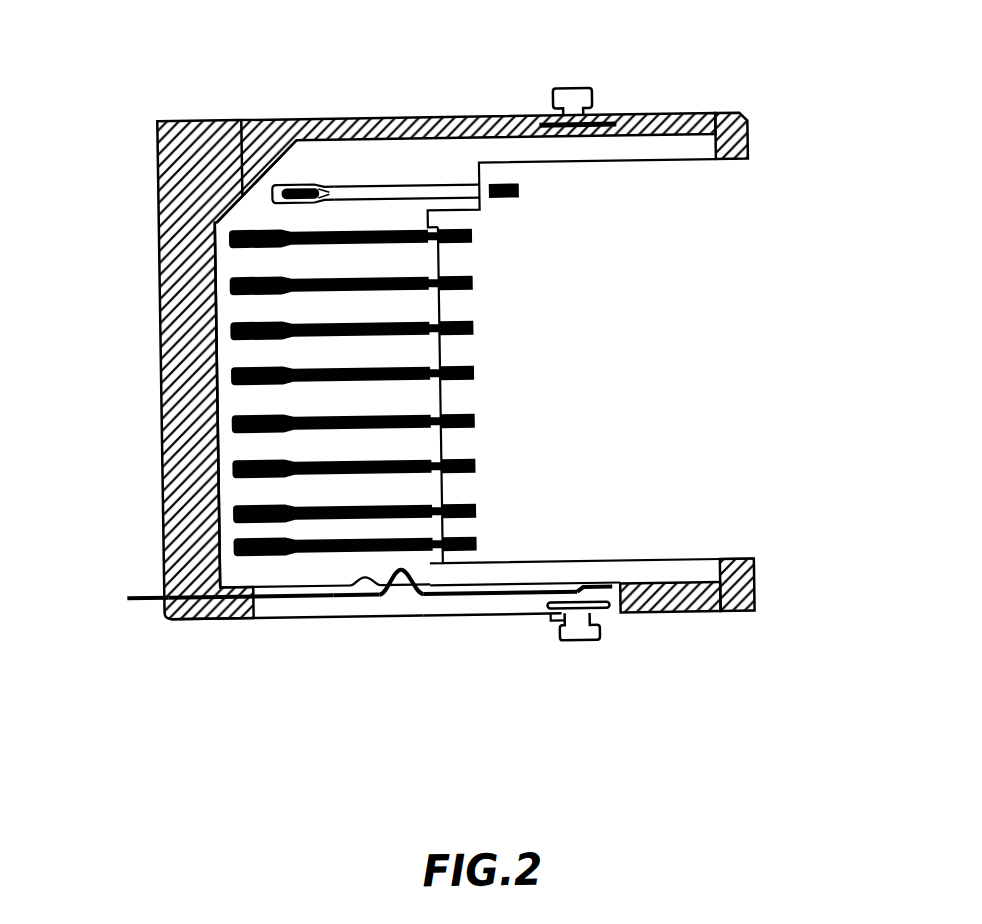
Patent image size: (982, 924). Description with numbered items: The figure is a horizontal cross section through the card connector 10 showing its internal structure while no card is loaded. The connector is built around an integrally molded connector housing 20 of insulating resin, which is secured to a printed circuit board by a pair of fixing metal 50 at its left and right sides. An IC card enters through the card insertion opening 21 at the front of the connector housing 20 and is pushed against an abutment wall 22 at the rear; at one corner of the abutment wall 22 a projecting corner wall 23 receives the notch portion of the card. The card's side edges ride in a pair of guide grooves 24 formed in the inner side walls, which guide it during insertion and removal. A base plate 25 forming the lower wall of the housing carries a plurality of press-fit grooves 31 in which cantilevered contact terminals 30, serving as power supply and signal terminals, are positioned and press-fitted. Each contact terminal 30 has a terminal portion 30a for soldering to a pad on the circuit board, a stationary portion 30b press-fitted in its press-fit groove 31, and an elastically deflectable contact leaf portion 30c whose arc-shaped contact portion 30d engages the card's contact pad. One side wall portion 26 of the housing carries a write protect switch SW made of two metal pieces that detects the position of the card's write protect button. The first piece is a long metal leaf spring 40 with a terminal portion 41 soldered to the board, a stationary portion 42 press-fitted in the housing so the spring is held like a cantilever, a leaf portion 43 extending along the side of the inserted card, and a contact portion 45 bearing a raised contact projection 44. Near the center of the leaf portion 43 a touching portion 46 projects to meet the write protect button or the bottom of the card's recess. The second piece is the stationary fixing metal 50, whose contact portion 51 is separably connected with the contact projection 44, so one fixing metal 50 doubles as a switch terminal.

The card connector 10 is at (798, 112).
The connector housing 20 is at (163, 172).
The card insertion opening 21 is at (697, 359).
The abutment wall 22 is at (205, 339).
The projecting corner wall 23 is at (246, 119).
The guide grooves 24 is at (663, 153).
The base plate 25 is at (442, 262).
The side wall portion 26 is at (400, 598).
The contact terminals 30 is at (414, 405).
The terminal portion 30a is at (552, 194).
The stationary portion 30b is at (405, 120).
The contact leaf portion 30c is at (328, 119).
The contact portion 30d is at (302, 122).
The press-fit grooves 31 is at (247, 319).
The metal leaf spring 40 is at (482, 574).
The terminal portion 41 is at (134, 599).
The stationary portion 42 is at (206, 617).
The leaf portion 43 is at (467, 591).
The contact projection 44 is at (552, 634).
The contact portion 45 is at (557, 587).
The touching portion 46 is at (345, 599).
The fixing metal 50 is at (579, 92).
The contact portion 51 is at (609, 602).
The write protect switch SW is at (524, 618).